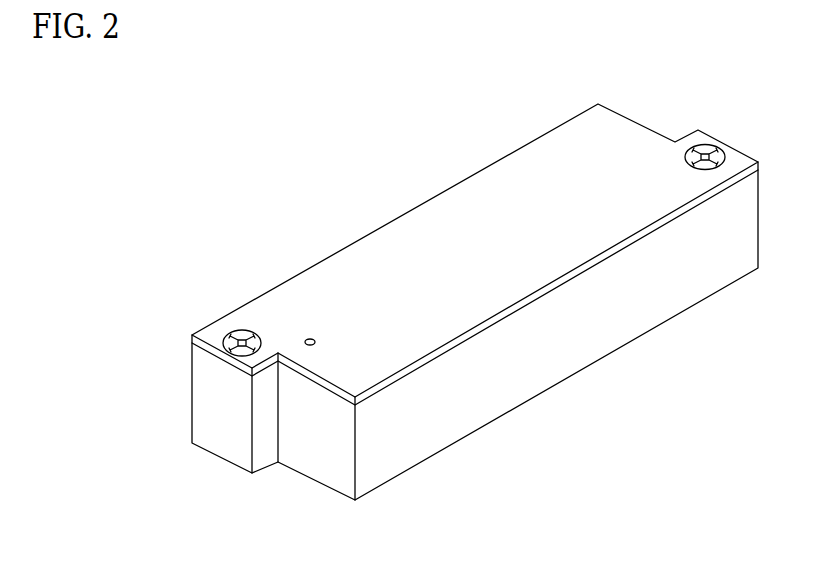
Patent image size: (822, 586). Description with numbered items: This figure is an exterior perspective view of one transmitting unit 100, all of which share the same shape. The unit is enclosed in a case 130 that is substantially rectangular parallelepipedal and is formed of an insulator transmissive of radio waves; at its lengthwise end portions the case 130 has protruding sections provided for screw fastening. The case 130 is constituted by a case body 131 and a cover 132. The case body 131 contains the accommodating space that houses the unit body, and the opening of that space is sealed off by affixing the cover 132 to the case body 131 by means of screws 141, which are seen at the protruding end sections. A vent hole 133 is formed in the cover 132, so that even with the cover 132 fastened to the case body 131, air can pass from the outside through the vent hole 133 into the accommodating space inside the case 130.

The transmitting unit 100 is at (308, 140).
The case 130 is at (530, 160).
The case body 131 is at (538, 375).
The cover 132 is at (348, 260).
The vent hole 133 is at (310, 339).
The screws 141 is at (230, 344).